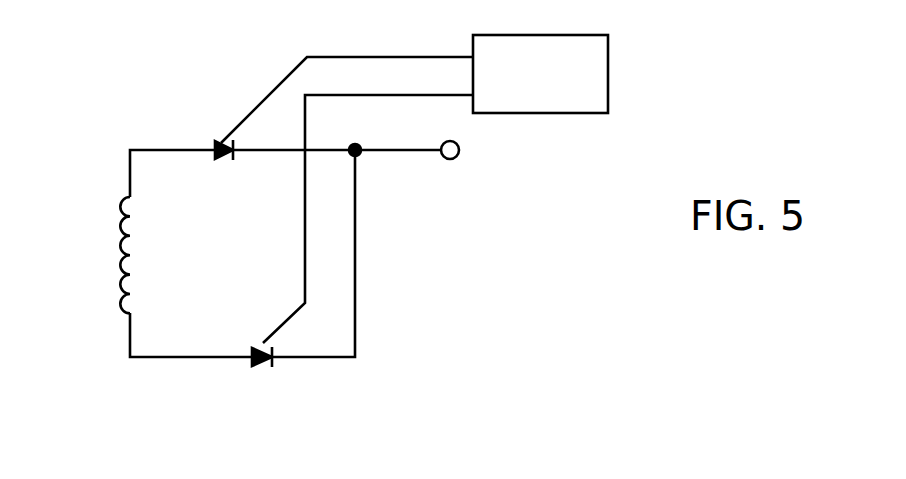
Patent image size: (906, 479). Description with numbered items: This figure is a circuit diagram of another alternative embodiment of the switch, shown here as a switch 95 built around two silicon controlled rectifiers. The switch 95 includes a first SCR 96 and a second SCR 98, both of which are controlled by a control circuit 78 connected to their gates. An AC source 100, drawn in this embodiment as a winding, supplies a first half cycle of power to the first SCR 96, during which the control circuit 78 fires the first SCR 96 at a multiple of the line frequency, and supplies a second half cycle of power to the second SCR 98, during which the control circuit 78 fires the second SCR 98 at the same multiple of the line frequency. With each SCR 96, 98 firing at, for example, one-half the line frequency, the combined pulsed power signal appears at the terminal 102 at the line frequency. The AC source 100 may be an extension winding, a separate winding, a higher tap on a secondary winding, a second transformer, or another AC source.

The switch 95 is at (172, 54).
The AC source 100 is at (106, 190).
The first SCR 96 is at (224, 158).
The second SCR 98 is at (266, 362).
The terminal 102 is at (404, 152).
The control circuit 78 is at (608, 72).